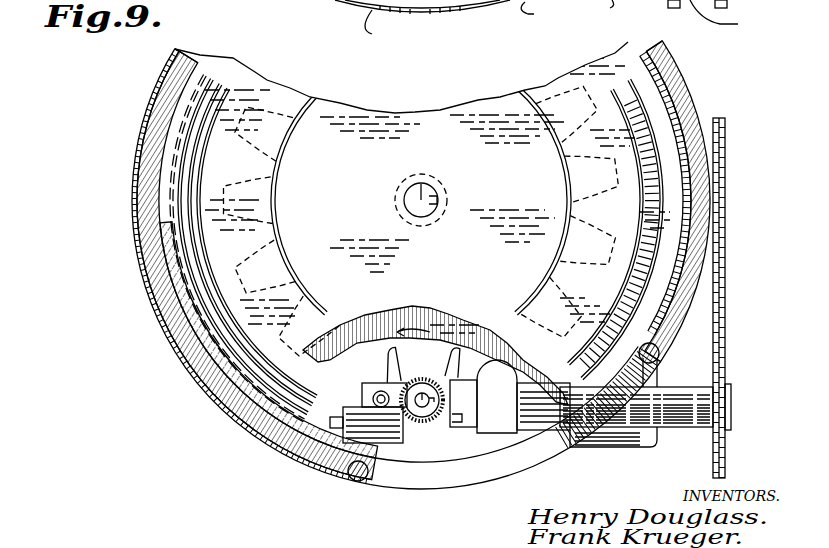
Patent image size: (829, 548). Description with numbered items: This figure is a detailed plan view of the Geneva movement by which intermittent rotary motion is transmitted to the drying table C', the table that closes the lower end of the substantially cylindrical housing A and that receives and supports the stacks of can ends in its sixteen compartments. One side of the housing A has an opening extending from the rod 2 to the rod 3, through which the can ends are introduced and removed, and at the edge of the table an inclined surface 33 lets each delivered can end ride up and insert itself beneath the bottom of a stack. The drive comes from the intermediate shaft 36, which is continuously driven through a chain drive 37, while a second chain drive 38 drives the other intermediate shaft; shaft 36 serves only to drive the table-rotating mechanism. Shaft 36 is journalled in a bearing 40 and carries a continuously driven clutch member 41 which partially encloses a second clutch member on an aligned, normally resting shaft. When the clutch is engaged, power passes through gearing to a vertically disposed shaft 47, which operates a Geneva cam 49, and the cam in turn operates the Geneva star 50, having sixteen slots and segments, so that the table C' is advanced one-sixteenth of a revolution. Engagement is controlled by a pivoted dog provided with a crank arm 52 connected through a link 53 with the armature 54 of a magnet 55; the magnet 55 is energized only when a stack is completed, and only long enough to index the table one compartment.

The housing A is at (130, 248).
The rod 2 is at (664, 350).
The rod 3 is at (357, 476).
The inclined surface 33 is at (210, 316).
The intermediate drive shaft 36 is at (732, 411).
The chain drive 37 is at (727, 170).
The chain drive 38 is at (757, 26).
The bearing 40 is at (628, 414).
The continuously driven clutch member 41 is at (502, 441).
The vertically disposed shaft 47 is at (420, 418).
The Geneva cam 49 is at (390, 412).
The Geneva star 50 is at (368, 352).
The crank arm 52 is at (447, 428).
The link 53 is at (462, 415).
The armature 54 is at (333, 422).
The magnet 55 is at (350, 444).
The table C' is at (438, 203).